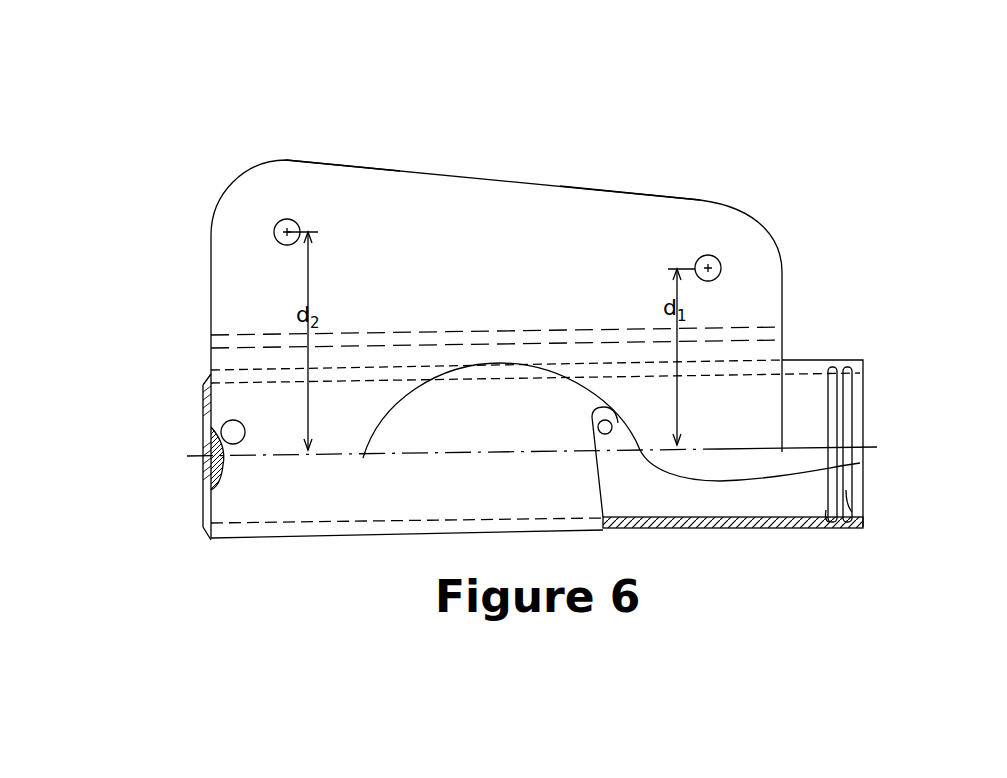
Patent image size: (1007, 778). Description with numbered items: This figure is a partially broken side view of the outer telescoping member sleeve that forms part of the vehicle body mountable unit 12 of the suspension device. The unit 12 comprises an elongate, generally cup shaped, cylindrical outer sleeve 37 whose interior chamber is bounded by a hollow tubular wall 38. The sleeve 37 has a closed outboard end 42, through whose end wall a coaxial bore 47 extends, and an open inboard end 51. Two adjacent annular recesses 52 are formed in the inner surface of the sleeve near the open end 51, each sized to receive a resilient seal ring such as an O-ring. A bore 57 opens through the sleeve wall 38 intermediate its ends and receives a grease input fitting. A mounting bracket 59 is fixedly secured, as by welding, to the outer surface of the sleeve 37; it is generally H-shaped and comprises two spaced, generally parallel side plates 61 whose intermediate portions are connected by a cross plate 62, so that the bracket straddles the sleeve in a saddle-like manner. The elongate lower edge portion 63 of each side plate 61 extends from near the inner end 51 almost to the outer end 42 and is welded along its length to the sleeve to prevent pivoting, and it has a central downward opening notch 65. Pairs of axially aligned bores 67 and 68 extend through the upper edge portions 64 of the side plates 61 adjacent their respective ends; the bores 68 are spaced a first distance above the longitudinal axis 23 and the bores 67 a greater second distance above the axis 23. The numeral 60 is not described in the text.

The vehicle body mountable unit 12 is at (628, 540).
The longitudinal axis 23 is at (870, 443).
The outer sleeve 37 is at (332, 507).
The tubular wall 38 is at (763, 527).
The outboard end 42 is at (203, 513).
The coaxial bore 47 is at (203, 457).
The open inboard end 51 is at (863, 358).
The annular recesses 52 is at (847, 490).
The bore 57 is at (607, 433).
The mounting bracket 59 is at (568, 185).
The hole 60 is at (227, 425).
The side plates 61 is at (487, 172).
The cross plate 62 is at (767, 333).
The lower edge portion 63 is at (353, 432).
The upper edge portion 64 is at (338, 180).
The notch 65 is at (407, 403).
The bores 67 is at (283, 220).
The bores 68 is at (720, 260).